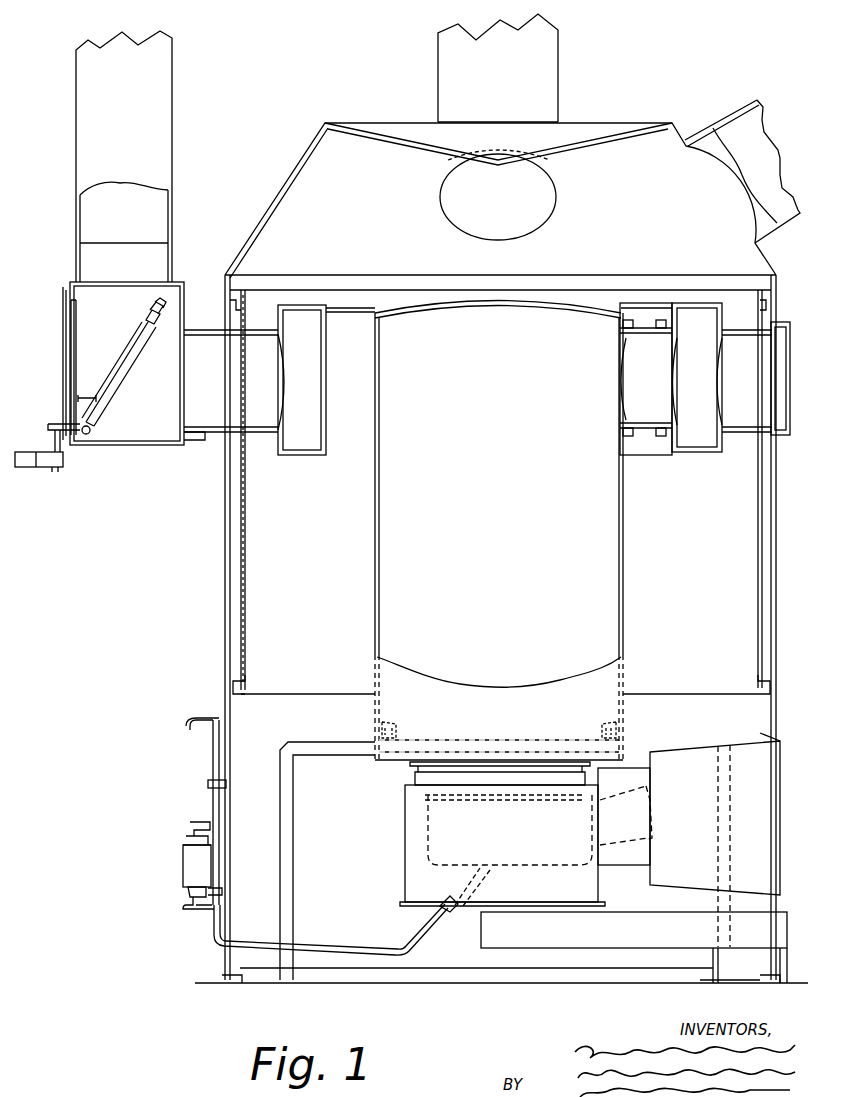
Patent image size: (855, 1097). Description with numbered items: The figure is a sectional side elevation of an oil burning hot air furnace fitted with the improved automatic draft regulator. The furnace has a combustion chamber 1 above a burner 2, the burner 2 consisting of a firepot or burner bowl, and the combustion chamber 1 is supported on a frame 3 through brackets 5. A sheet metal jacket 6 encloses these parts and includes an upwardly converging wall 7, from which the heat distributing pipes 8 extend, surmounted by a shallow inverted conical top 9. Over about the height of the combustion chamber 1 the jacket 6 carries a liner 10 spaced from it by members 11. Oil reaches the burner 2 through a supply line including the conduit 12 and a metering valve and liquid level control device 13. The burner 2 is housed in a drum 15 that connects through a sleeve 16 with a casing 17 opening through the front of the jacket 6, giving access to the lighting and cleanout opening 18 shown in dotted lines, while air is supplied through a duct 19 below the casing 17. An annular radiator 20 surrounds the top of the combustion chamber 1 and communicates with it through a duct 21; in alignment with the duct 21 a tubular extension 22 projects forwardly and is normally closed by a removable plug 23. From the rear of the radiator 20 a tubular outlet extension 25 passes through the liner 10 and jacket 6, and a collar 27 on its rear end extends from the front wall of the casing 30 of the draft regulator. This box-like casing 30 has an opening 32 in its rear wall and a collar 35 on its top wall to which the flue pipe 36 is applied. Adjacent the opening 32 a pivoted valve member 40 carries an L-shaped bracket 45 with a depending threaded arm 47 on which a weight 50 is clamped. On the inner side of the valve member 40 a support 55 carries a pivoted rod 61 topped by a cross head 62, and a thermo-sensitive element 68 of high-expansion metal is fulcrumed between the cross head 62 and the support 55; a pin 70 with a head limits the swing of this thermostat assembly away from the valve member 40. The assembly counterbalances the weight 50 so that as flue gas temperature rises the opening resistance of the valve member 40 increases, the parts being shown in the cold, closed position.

The combustion chamber 1 is at (608, 615).
The burner 2 is at (428, 831).
The frame 3 is at (290, 815).
The brackets 5 is at (378, 738).
The jacket 6 is at (228, 598).
The upwardly converging wall 7 is at (282, 192).
The heat distributing pipes 8 is at (558, 88).
The inverted conical top 9 is at (408, 124).
The liner 10 is at (246, 538).
The members 11 is at (247, 683).
The conduit 12 is at (344, 948).
The metering valve and liquid level control device 13 is at (184, 894).
The drum 15 is at (404, 877).
The sleeve 16 is at (634, 860).
The casing 17 is at (692, 876).
The lighting and cleanout opening 18 is at (650, 810).
The duct 19 is at (634, 947).
The annular radiator 20 is at (306, 442).
The duct 21 is at (652, 410).
The tubular extension 22 is at (742, 415).
The removable plug 23 is at (770, 377).
The tubular outlet extension 25 is at (231, 381).
The collar 27 is at (205, 442).
The casing 30 is at (124, 447).
The opening 32 is at (63, 322).
The collar 35 is at (170, 252).
The pipe 36 is at (188, 208).
The valve member 40 is at (70, 358).
The L-shaped bracket 45 is at (56, 420).
The arm 47 is at (54, 437).
The weight 50 is at (40, 468).
The support 55 is at (92, 432).
The rod 61 is at (108, 366).
The cross head 62 is at (144, 312).
The thermo-sensitive element 68 is at (118, 384).
The pin 70 is at (91, 392).